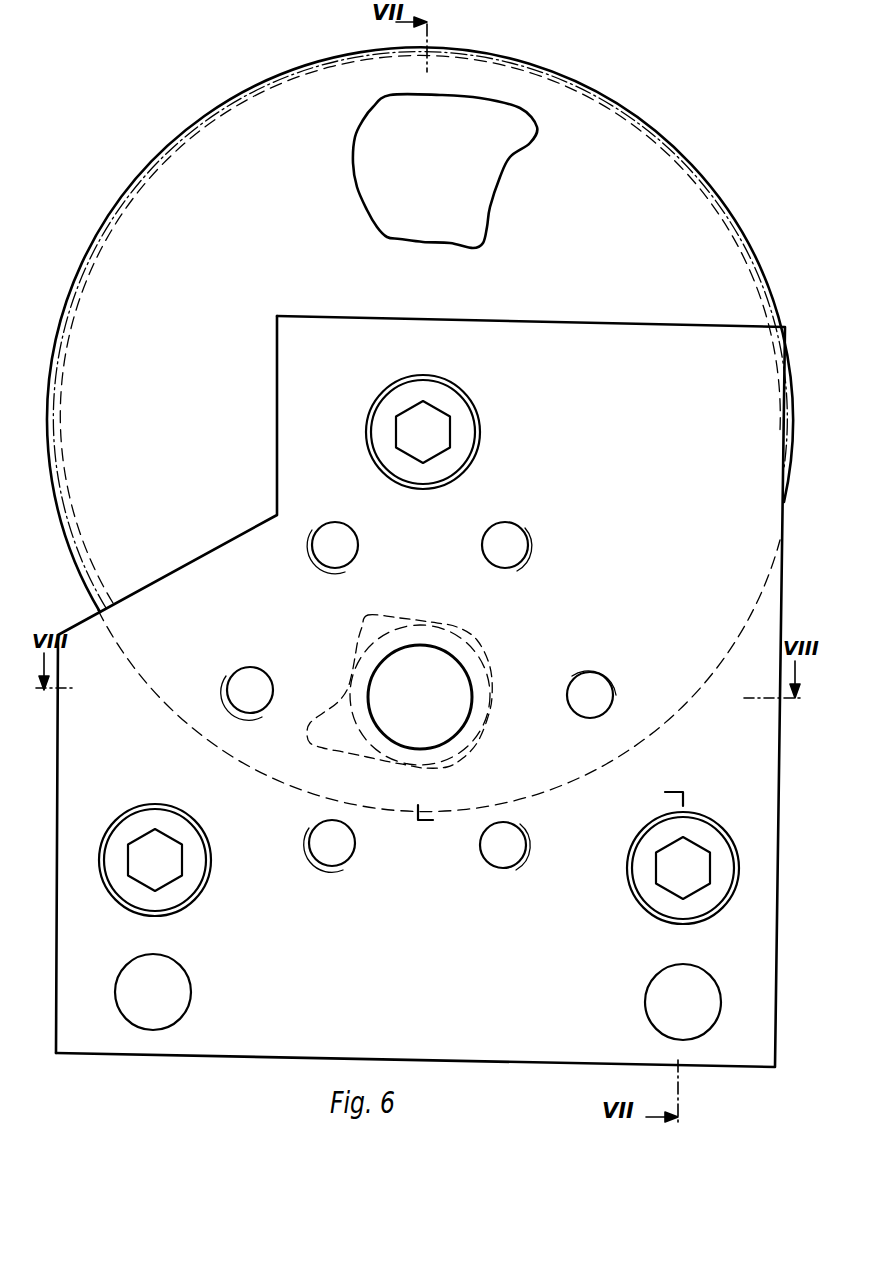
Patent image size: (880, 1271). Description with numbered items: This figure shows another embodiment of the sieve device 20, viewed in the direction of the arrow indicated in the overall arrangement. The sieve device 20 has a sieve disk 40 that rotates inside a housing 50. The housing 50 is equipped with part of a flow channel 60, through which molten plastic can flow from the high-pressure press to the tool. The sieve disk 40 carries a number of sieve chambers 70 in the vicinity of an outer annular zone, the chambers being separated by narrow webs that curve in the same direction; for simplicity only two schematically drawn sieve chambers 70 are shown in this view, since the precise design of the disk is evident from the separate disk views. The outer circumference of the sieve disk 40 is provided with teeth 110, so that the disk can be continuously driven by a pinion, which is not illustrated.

The sieve device 20 is at (60, 628).
The sieve disk 40 is at (547, 100).
The housing 50 is at (774, 777).
The flow channel 60 is at (411, 713).
The sieve chambers 70 is at (490, 116).
The teeth 110 is at (702, 174).